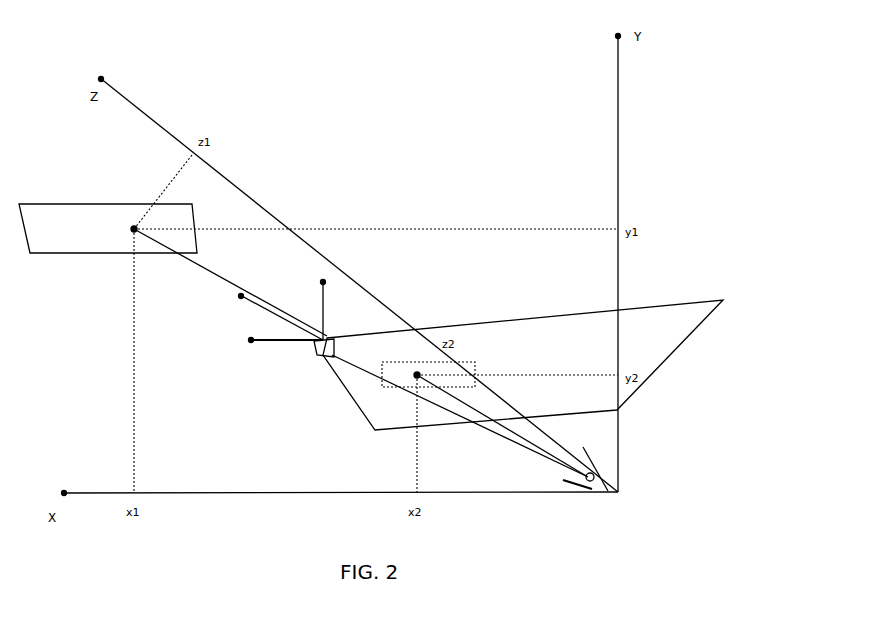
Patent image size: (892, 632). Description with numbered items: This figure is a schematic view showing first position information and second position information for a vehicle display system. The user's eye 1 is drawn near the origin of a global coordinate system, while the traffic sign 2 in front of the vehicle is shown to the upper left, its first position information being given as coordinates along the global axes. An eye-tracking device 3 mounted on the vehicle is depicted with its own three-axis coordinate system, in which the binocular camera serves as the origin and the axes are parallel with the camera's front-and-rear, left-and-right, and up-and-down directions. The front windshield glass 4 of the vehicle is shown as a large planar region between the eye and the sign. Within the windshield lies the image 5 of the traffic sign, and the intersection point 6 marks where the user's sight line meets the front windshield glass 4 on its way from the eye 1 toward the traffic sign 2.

The user's eye 1 is at (597, 468).
The traffic sign 2 is at (57, 219).
The eye-tracking device 3 is at (310, 365).
The front windshield glass 4 is at (643, 313).
The image of the traffic sign 5 is at (472, 368).
The intersection point 6 is at (417, 375).